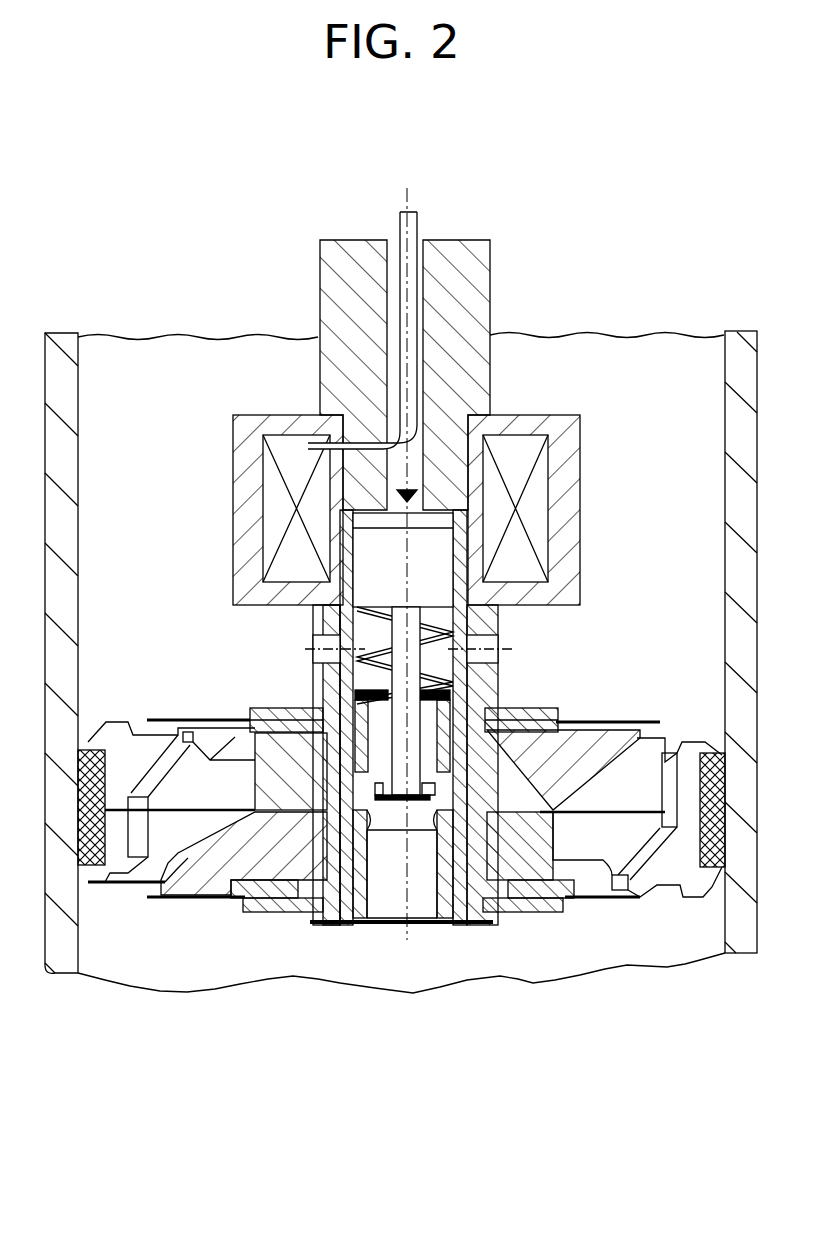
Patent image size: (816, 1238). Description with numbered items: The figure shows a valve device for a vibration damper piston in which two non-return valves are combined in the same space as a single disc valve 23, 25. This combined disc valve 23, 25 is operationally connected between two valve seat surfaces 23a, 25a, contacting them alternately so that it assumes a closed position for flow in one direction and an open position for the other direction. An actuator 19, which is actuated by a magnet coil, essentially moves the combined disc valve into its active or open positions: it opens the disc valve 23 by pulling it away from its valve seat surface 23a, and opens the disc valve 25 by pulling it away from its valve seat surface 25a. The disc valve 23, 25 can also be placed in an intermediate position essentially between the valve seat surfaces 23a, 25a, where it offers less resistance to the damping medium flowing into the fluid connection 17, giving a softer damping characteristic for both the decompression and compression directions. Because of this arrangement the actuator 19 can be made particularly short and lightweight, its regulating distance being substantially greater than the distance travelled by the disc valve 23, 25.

The fluid connection 17 is at (418, 895).
The actuator 19 is at (408, 718).
The disc valve 23 is at (352, 758).
The valve seat surface 23a is at (598, 721).
The disc valve 25 is at (387, 805).
The valve seat surface 25a is at (406, 805).